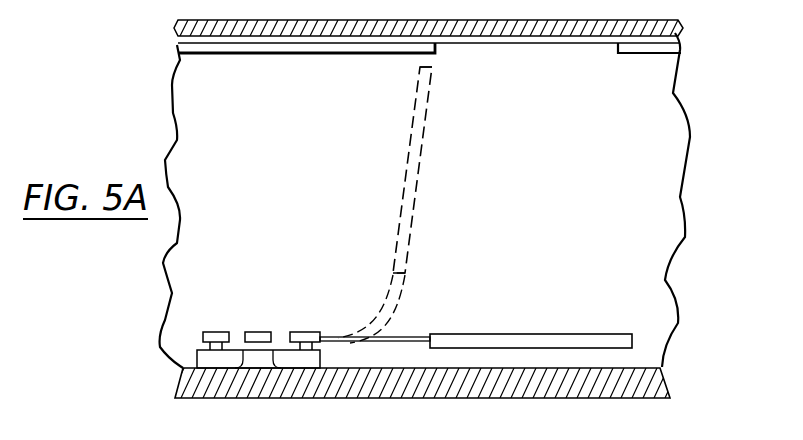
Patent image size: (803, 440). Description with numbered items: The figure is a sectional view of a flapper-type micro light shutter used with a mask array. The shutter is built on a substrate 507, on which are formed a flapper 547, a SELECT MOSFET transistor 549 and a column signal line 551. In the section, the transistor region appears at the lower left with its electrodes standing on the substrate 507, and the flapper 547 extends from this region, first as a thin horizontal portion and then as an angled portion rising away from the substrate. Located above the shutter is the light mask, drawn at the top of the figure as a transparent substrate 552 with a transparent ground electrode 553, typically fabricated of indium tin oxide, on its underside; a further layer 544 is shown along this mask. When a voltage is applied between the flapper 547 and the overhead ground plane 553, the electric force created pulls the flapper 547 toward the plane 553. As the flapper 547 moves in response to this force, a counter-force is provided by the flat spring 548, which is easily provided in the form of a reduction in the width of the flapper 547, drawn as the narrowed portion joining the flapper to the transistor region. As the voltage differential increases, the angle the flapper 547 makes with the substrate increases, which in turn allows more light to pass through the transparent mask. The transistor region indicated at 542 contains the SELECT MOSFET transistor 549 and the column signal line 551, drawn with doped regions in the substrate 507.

The transparent substrate 552 is at (178, 30).
The transparent ground electrode 553 is at (180, 40).
The conductive line 544 is at (183, 54).
The flapper 547 is at (415, 188).
The flat spring 548 is at (412, 336).
The transistor 542 is at (297, 306).
The column signal line 551 is at (215, 332).
The SELECT MOSFET transistor 549 is at (256, 332).
The substrate 507 is at (184, 381).